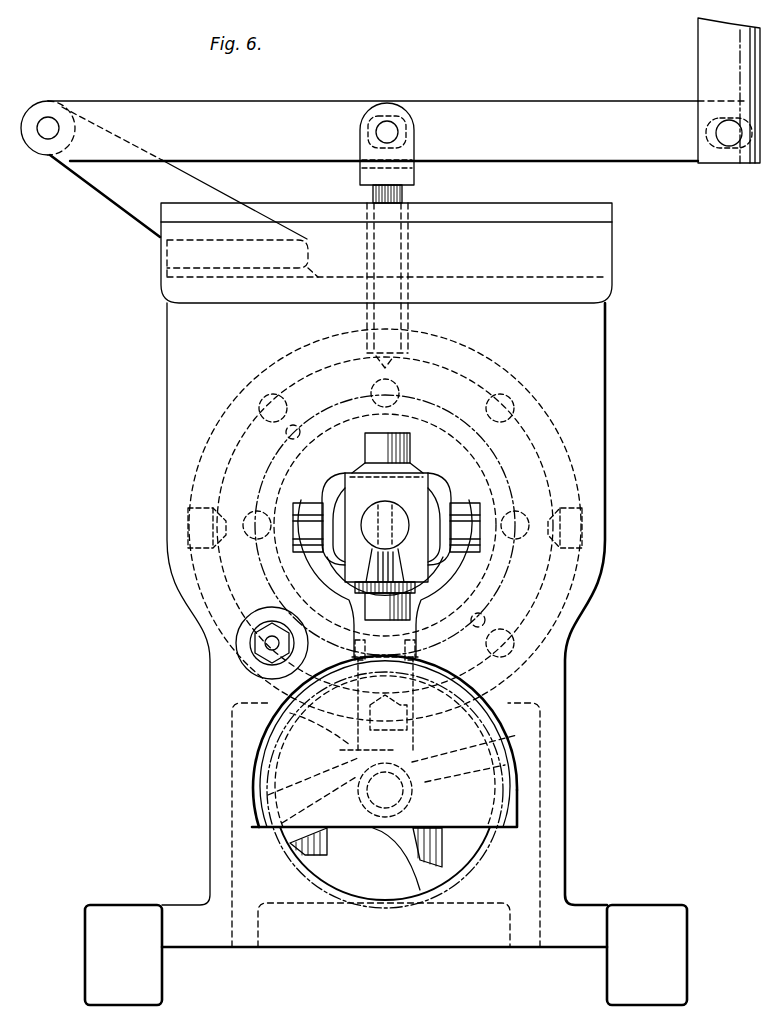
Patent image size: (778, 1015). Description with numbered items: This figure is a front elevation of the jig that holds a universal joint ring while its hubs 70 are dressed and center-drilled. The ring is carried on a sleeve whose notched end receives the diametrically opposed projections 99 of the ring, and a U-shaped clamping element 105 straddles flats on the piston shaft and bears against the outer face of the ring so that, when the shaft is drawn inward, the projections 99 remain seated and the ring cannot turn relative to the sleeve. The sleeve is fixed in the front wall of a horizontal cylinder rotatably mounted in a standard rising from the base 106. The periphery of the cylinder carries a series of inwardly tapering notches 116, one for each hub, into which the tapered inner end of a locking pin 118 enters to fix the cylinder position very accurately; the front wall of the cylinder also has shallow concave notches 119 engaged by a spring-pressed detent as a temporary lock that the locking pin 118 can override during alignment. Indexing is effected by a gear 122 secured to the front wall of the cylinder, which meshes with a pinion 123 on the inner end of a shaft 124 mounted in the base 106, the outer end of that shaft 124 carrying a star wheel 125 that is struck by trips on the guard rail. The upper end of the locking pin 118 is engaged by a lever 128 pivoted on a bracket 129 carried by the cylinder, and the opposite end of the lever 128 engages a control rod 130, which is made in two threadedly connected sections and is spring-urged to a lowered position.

The hub 70 is at (380, 452).
The projection 99 is at (335, 546).
The U-shaped clamping element 105 is at (410, 489).
The base 106 is at (340, 862).
The notch 116 is at (206, 517).
The locking pin 118 is at (403, 192).
The concave notch 119 is at (262, 403).
The gear 122 is at (438, 644).
The pinion 123 is at (500, 841).
The shaft 124 is at (400, 794).
The star wheel 125 is at (447, 852).
The lever 128 is at (543, 111).
The bracket 129 is at (110, 190).
The control rod 130 is at (710, 51).